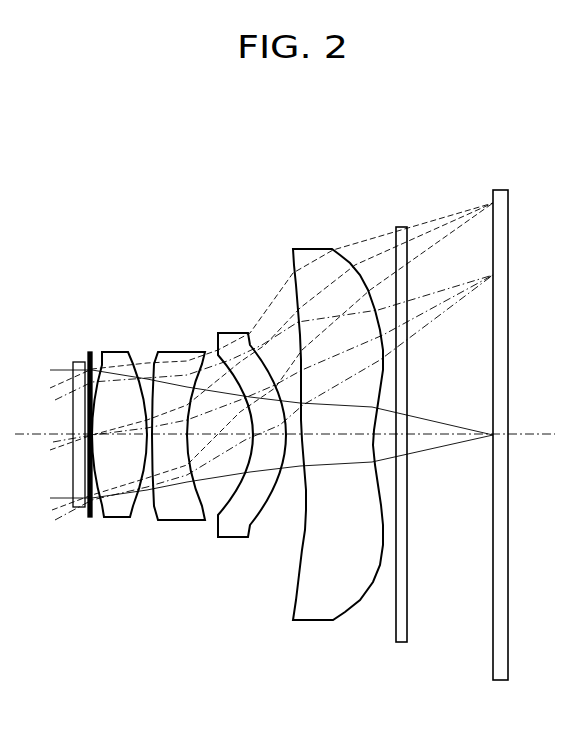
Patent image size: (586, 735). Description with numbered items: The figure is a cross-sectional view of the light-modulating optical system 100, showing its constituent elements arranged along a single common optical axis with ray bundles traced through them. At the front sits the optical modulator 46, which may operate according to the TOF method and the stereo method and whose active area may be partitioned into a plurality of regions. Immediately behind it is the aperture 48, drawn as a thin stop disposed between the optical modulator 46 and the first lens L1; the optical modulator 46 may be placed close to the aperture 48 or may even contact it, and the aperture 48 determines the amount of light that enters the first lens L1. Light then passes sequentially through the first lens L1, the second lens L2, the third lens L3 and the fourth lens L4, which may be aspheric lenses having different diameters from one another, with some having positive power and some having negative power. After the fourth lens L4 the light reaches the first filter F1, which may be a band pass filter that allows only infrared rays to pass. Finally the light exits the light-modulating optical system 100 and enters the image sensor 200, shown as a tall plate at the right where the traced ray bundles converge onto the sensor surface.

The light-modulating optical system 100 is at (412, 168).
The optical modulator 46 is at (73, 360).
The aperture 48 is at (90, 352).
The first lens L1 is at (125, 352).
The second lens L2 is at (178, 352).
The third lens L3 is at (232, 333).
The fourth lens L4 is at (310, 250).
The first filter F1 is at (400, 227).
The image sensor 200 is at (503, 190).